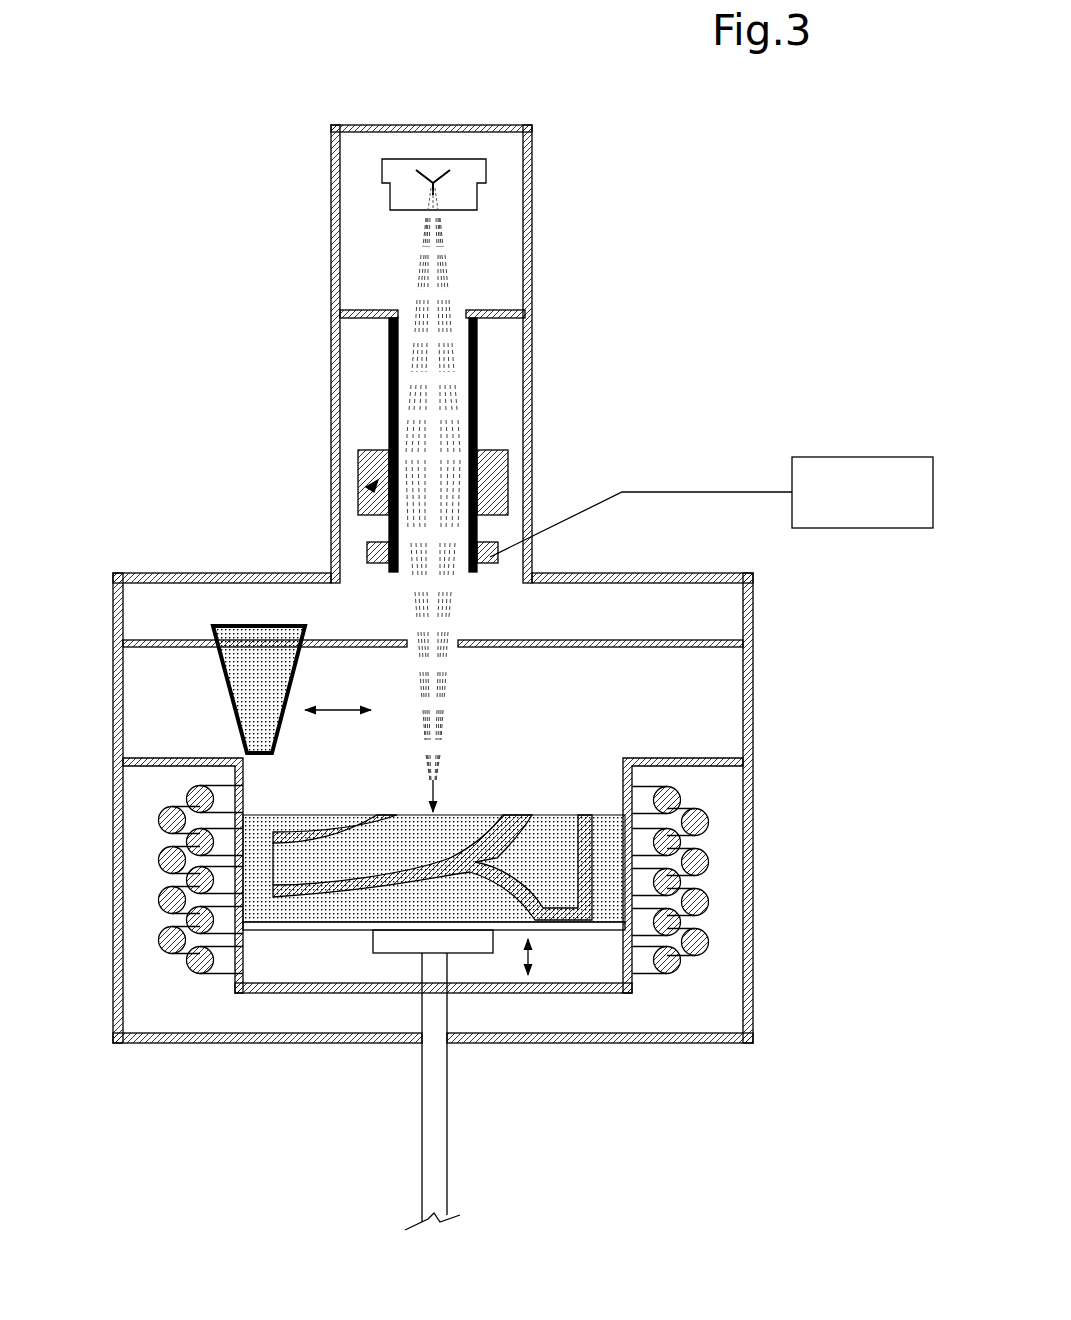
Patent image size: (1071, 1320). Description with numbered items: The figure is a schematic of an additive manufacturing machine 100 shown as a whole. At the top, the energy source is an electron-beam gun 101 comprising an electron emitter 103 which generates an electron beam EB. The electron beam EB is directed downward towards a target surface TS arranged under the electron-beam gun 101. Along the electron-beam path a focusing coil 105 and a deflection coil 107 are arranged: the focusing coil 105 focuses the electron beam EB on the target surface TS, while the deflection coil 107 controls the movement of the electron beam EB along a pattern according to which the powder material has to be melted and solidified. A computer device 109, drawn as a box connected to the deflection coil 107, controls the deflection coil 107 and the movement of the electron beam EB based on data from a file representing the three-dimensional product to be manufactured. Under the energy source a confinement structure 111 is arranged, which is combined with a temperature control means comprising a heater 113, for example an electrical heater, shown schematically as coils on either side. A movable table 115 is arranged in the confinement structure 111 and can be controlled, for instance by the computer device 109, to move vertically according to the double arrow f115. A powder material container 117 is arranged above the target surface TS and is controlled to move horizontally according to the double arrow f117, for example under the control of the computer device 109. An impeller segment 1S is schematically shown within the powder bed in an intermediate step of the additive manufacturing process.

The additive manufacturing machine 100 is at (182, 487).
The electron-beam gun 101 is at (516, 200).
The electron emitter 103 is at (463, 198).
The focusing coil 105 is at (496, 478).
The deflection coil 107 is at (378, 556).
The computer device 109 is at (860, 463).
The confinement structure 111 is at (121, 815).
The heater 113 is at (172, 900).
The movable table 115 is at (327, 925).
The powder material container 117 is at (248, 694).
The electron beam EB is at (430, 272).
The target surface TS is at (346, 814).
The impeller segment 1S is at (519, 812).
The double arrow f117 is at (346, 710).
The double arrow f115 is at (531, 957).